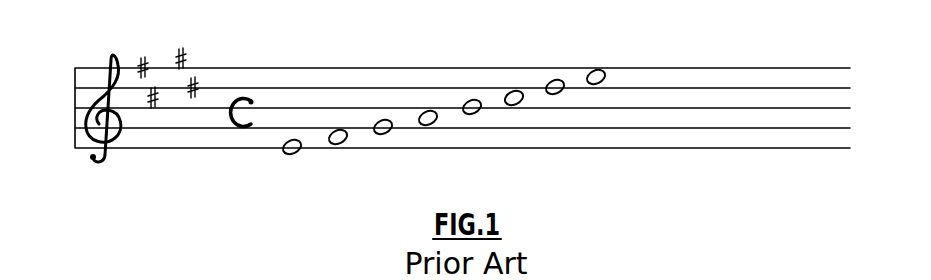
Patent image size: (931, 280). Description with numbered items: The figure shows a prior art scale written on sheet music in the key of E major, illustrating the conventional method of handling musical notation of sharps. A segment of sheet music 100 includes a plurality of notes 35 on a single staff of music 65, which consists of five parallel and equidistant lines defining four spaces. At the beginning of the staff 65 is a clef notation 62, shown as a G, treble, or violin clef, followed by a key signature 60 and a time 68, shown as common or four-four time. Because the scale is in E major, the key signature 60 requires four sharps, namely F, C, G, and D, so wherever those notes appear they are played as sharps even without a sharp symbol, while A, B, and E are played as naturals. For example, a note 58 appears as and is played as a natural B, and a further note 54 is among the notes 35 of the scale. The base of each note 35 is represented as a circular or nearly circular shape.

The segment of sheet music 100 is at (79, 164).
The staff of music 65 is at (702, 148).
The clef notation 62 is at (118, 134).
The key signature 60 is at (160, 52).
The time 68 is at (244, 95).
The notes 35 is at (296, 153).
The note 58 is at (474, 114).
The note 54 is at (522, 104).